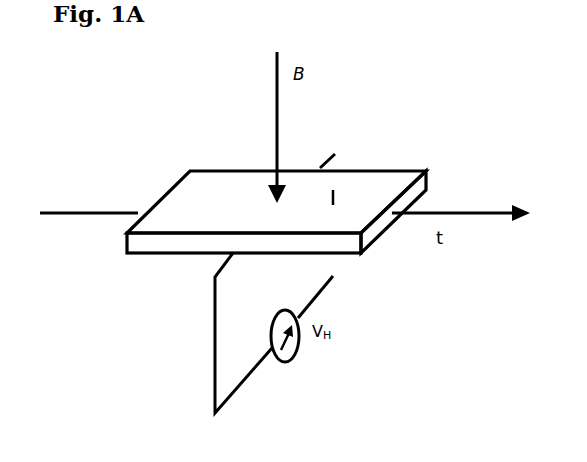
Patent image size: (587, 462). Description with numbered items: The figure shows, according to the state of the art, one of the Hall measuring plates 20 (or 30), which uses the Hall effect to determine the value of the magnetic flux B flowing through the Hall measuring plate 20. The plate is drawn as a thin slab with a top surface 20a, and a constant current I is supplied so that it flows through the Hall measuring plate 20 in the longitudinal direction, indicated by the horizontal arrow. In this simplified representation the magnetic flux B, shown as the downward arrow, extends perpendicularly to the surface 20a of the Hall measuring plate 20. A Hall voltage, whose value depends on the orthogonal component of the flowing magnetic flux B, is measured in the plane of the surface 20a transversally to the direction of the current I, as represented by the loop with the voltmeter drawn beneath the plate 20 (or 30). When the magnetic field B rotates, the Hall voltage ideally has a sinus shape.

The Hall measuring plate 20 is at (258, 226).
The surface of the Hall measuring plate 20a is at (276, 210).
The Hall measuring plate 30 is at (244, 257).